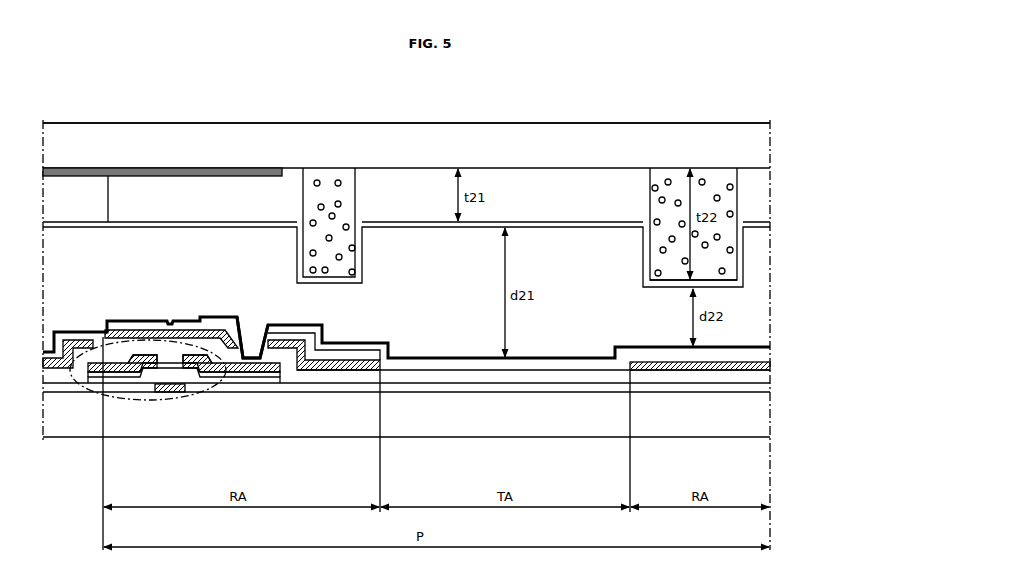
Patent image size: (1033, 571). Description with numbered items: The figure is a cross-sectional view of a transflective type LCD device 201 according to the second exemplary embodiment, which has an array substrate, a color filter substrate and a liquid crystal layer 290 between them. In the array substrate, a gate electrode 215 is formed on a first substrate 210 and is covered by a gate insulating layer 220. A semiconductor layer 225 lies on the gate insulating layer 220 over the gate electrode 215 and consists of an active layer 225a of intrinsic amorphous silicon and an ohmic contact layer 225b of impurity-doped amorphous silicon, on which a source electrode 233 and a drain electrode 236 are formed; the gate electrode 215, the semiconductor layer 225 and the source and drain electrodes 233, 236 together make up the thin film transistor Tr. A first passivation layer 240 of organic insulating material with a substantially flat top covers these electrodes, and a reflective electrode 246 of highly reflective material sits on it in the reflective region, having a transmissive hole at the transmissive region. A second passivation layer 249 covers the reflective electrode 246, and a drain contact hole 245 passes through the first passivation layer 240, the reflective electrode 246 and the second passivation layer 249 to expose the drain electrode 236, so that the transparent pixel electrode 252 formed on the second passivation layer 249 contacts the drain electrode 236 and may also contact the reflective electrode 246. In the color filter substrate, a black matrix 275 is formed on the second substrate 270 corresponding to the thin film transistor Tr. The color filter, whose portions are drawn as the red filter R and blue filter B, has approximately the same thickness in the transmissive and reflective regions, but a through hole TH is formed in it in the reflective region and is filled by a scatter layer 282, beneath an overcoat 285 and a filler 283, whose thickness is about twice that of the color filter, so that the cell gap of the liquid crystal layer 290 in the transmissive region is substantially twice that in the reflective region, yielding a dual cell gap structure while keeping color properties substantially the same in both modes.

The transflective type LCD device 201 is at (714, 106).
The second substrate 270 is at (736, 154).
The black matrix 275 is at (215, 168).
The overcoat 285 is at (480, 227).
The filler in through hole 283 is at (652, 281).
The scatter layer 282 is at (668, 283).
The liquid crystal layer 290 is at (746, 304).
The first substrate 210 is at (737, 424).
The gate electrode 215 is at (177, 393).
The gate insulating layer 220 is at (445, 390).
The semiconductor layer 225 is at (189, 420).
The active layer 225a is at (237, 379).
The ohmic contact layer 225b is at (257, 374).
The source electrode 233 is at (137, 355).
The drain electrode 236 is at (192, 355).
The first passivation layer 240 is at (318, 378).
The drain contact hole 245 is at (252, 342).
The reflective electrode 246 is at (353, 371).
The second passivation layer 249 is at (343, 355).
The pixel electrode 252 is at (380, 357).
The thin film transistor Tr is at (140, 398).
The through hole TH is at (326, 178).
The red color filter R is at (566, 208).
The blue color filter B is at (170, 199).